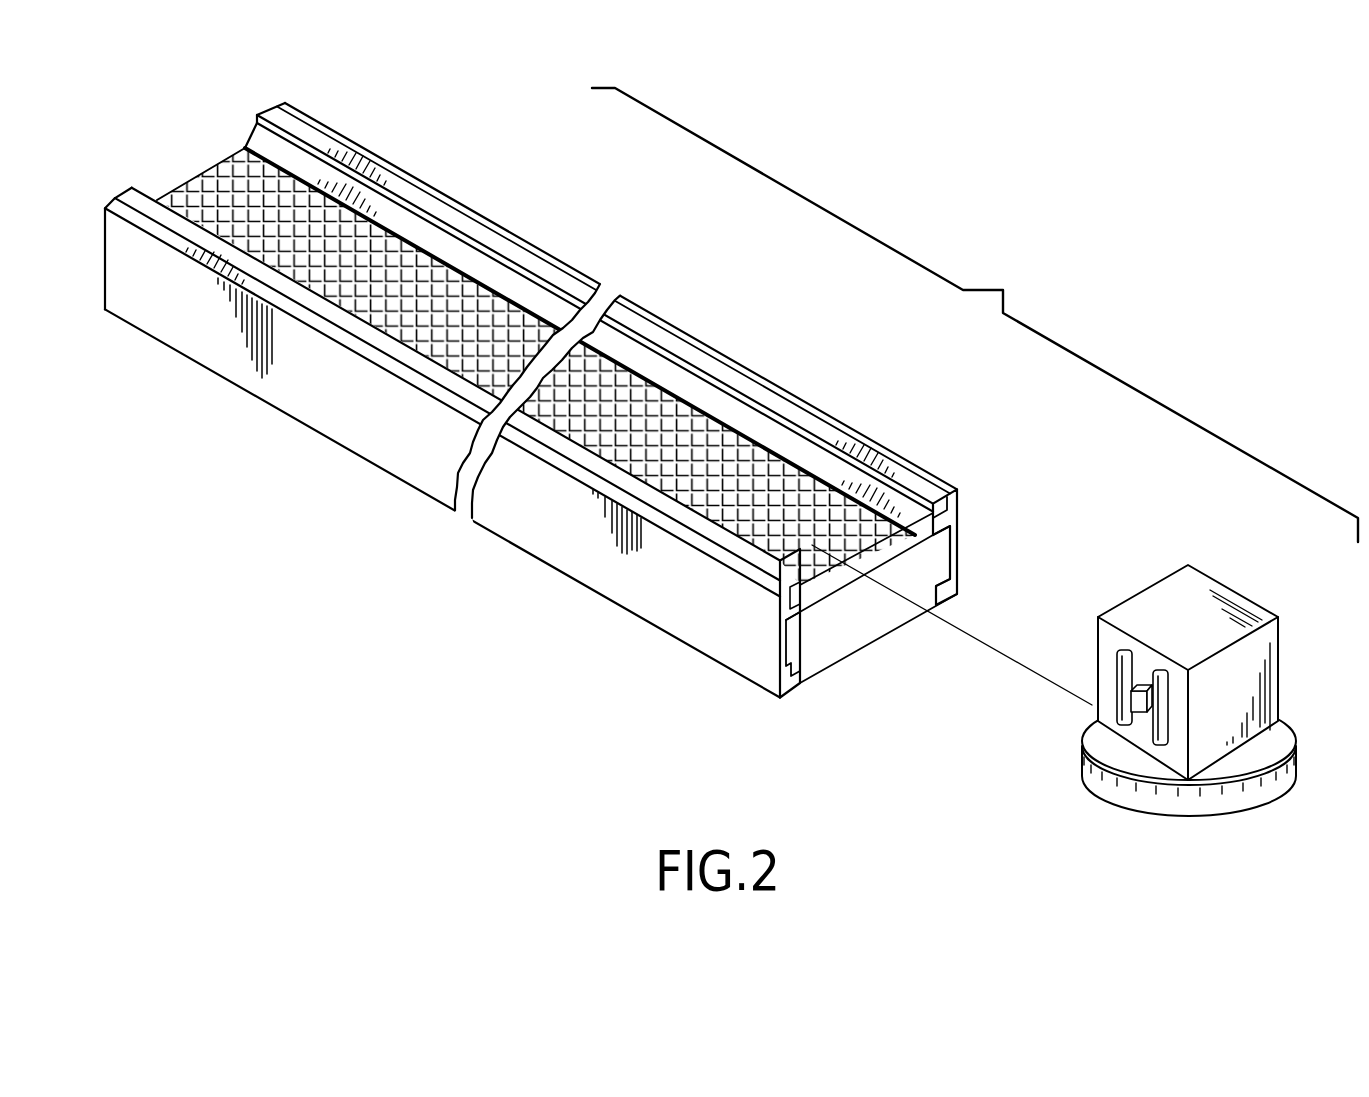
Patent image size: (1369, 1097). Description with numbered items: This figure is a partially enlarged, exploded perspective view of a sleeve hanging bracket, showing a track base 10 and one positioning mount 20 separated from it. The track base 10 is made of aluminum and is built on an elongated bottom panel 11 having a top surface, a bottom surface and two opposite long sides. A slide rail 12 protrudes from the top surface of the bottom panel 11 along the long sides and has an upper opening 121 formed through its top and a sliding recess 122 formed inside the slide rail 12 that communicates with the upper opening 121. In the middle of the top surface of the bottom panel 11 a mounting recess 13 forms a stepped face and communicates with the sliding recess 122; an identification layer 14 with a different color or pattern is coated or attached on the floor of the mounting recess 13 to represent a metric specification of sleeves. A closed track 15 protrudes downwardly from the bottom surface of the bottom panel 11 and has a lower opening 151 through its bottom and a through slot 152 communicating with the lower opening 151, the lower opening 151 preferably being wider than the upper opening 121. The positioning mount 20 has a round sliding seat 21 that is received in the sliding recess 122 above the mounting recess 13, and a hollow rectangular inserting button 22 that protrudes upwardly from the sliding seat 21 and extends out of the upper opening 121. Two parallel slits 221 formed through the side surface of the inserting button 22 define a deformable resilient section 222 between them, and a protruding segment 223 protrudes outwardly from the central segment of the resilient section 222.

The track base 10 is at (598, 404).
The bottom panel 11 is at (691, 387).
The slide rail 12 is at (646, 354).
The upper opening 121 is at (644, 340).
The sliding recess 122 is at (931, 522).
The mounting recess 13 is at (880, 520).
The identification layer 14 is at (731, 470).
The closed track 15 is at (570, 443).
The lower opening 151 is at (925, 594).
The through slot 152 is at (936, 548).
The positioning mount 20 is at (1173, 703).
The sliding seat 21 is at (1277, 783).
The inserting button 22 is at (1166, 703).
The slits 221 is at (1123, 703).
The resilient section 222 is at (1143, 722).
The protruding segment 223 is at (1138, 697).